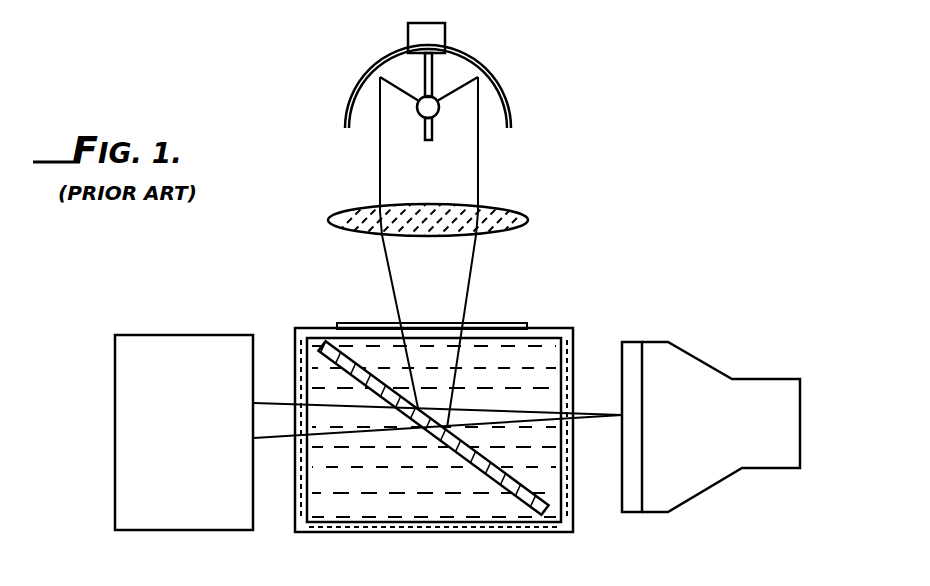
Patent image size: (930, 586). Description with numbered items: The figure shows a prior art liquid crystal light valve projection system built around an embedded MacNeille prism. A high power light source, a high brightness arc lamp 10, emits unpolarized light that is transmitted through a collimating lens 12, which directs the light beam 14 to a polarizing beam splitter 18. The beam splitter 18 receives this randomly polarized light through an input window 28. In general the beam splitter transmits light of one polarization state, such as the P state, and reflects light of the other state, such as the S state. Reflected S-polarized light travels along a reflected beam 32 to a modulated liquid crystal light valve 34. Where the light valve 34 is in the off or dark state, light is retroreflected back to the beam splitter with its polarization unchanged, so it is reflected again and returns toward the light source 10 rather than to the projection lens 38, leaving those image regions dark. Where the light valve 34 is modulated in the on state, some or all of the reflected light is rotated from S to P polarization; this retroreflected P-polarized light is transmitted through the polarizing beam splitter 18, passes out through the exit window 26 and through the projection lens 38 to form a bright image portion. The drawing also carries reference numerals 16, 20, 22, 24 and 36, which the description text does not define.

The arc lamp 10 is at (496, 70).
The collimating lens 12 is at (500, 210).
The light beam 14 is at (473, 268).
The beam splitter 16 is at (508, 450).
The polarizing beam splitter 18 is at (528, 300).
The coupling liquid 20 is at (392, 486).
The bottom wall 22 is at (405, 534).
The right wall 24 is at (573, 372).
The exit window 26 is at (296, 503).
The input window 28 is at (437, 326).
The reflected beam 32 is at (489, 410).
The liquid crystal light valve 34 is at (628, 345).
The CRT 36 is at (707, 362).
The projection lens 38 is at (178, 334).